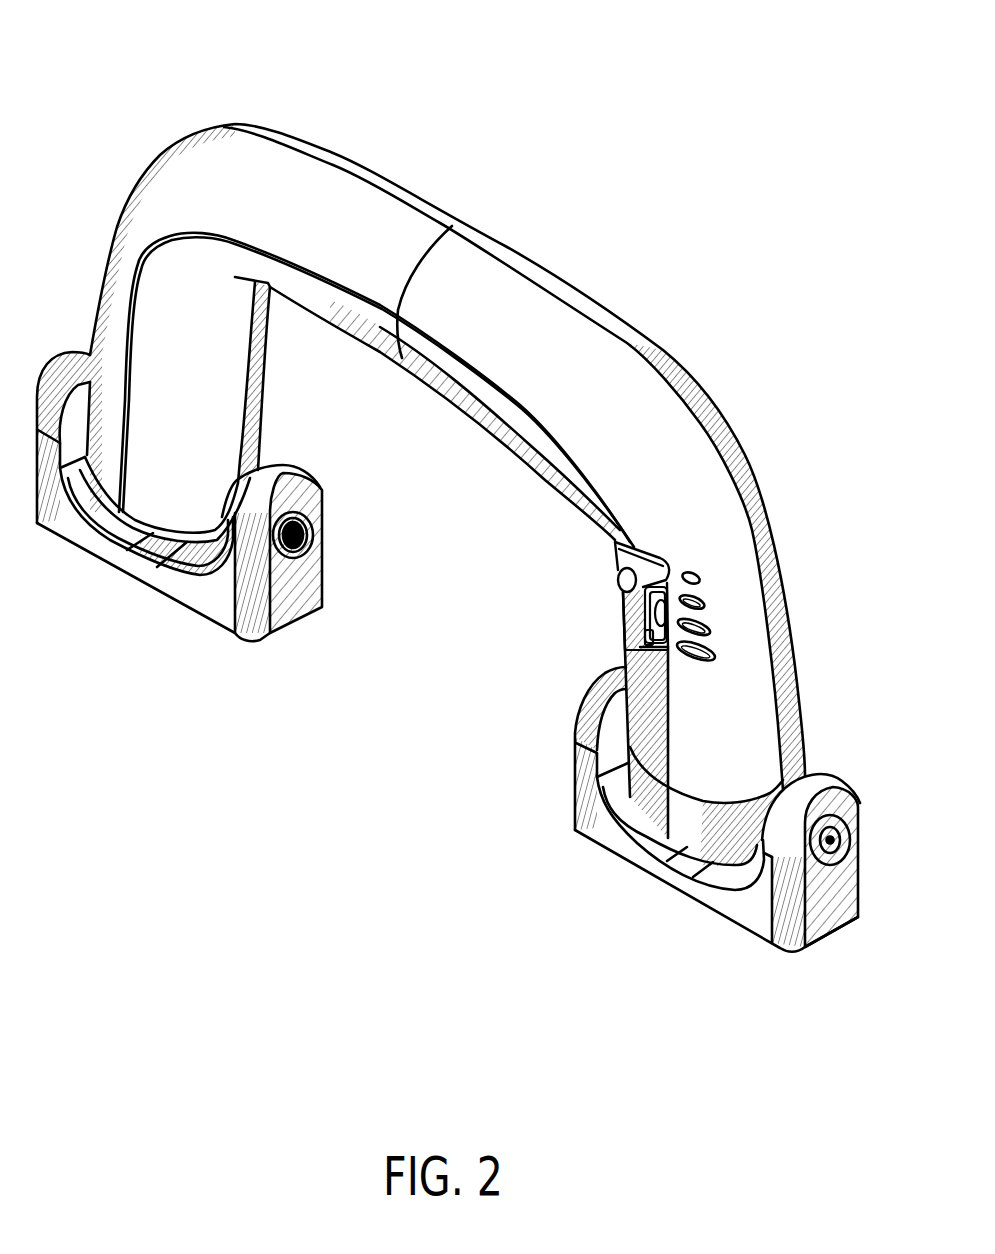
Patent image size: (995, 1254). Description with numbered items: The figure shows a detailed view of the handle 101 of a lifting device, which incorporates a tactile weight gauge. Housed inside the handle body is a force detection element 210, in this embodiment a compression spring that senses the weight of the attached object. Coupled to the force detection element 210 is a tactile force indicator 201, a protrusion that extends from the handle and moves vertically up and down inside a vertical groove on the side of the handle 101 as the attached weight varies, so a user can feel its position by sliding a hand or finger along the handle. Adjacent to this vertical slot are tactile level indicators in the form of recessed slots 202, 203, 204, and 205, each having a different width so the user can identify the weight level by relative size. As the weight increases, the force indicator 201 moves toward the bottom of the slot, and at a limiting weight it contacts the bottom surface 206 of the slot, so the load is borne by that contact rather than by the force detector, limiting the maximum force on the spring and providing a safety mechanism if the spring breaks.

The handle 101 is at (277, 180).
The tactile force indicator 201 is at (615, 541).
The slot 202 is at (697, 574).
The slot 203 is at (703, 598).
The slot 204 is at (709, 632).
The slot 205 is at (714, 658).
The bottom surface 206 is at (643, 647).
The force detection element 210 is at (650, 617).